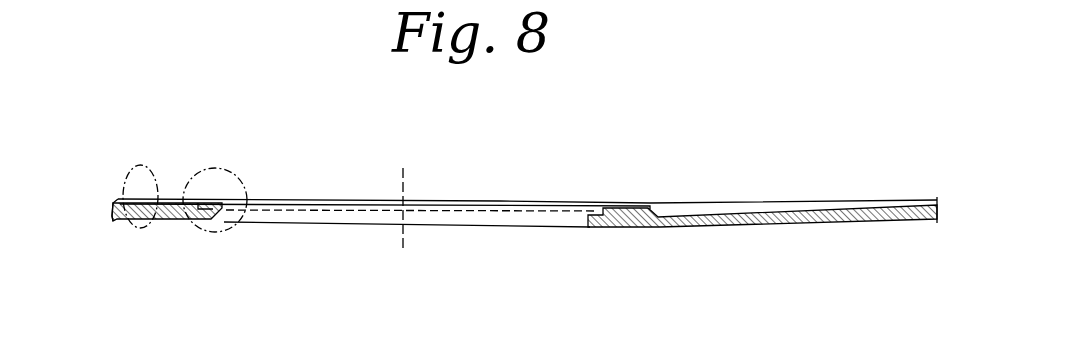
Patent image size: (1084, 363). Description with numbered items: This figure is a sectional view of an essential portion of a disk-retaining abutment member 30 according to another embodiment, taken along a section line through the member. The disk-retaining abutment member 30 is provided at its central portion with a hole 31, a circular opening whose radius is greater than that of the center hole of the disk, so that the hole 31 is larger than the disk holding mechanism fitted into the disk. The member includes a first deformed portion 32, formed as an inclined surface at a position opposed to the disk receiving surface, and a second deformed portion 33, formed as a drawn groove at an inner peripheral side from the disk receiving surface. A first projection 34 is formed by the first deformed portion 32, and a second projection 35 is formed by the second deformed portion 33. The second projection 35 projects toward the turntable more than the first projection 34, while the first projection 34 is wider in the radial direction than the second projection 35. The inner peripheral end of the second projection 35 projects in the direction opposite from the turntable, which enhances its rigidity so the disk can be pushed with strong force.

The disk-retaining abutment member 30 is at (120, 199).
The hole 31 is at (357, 210).
The first deformed portion 32 is at (146, 163).
The second deformed portion 33 is at (228, 168).
The first projection 34 is at (162, 219).
The second projection 35 is at (203, 220).